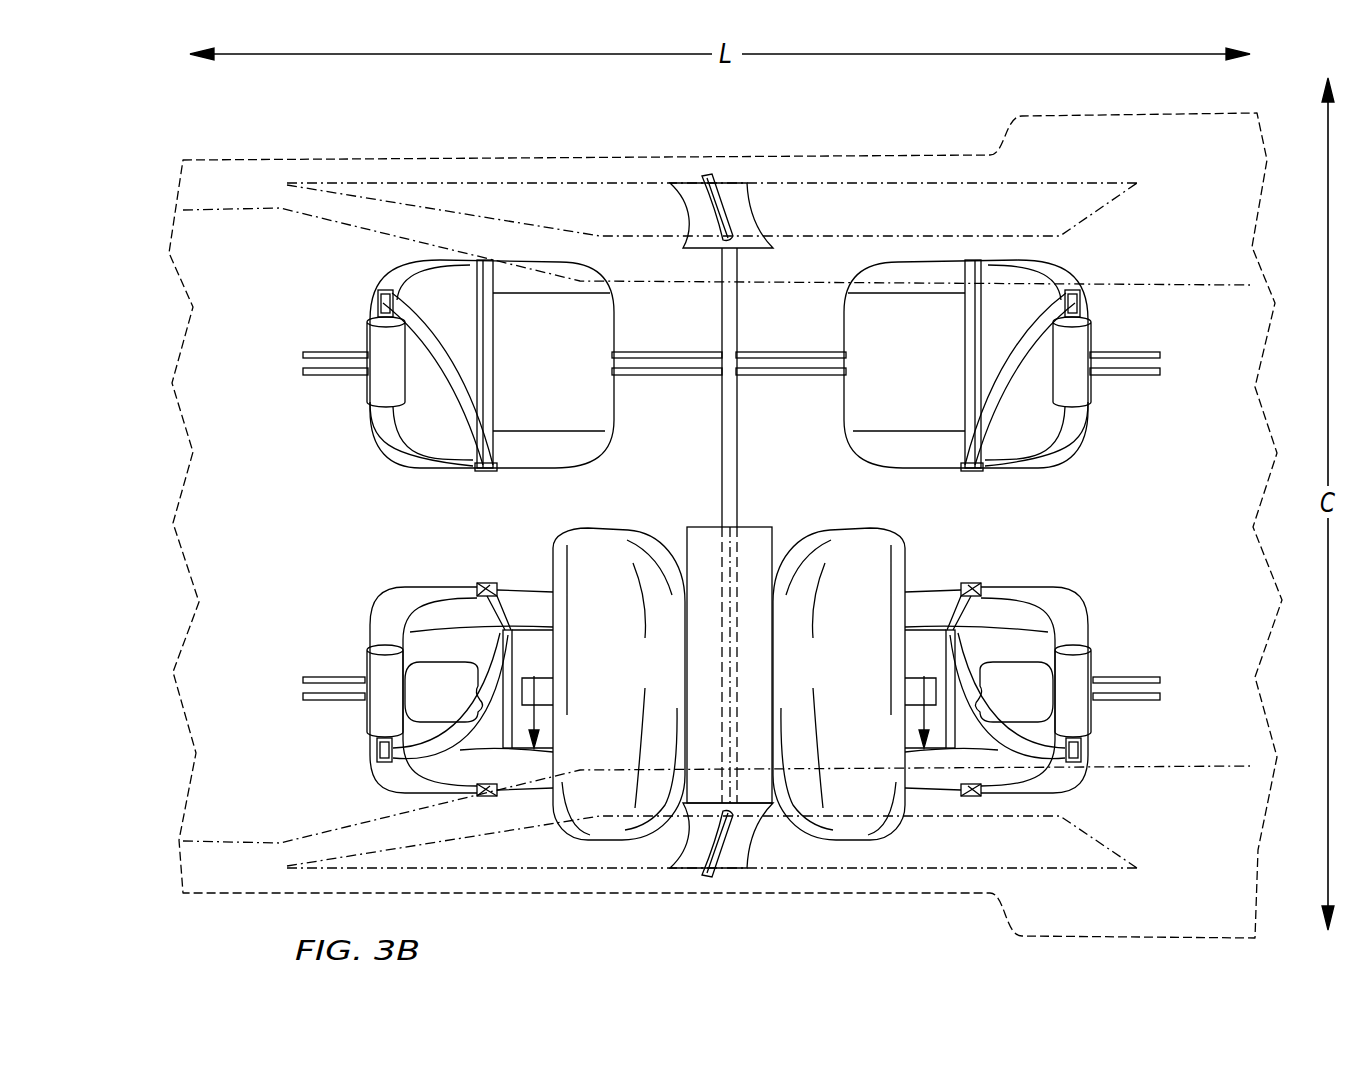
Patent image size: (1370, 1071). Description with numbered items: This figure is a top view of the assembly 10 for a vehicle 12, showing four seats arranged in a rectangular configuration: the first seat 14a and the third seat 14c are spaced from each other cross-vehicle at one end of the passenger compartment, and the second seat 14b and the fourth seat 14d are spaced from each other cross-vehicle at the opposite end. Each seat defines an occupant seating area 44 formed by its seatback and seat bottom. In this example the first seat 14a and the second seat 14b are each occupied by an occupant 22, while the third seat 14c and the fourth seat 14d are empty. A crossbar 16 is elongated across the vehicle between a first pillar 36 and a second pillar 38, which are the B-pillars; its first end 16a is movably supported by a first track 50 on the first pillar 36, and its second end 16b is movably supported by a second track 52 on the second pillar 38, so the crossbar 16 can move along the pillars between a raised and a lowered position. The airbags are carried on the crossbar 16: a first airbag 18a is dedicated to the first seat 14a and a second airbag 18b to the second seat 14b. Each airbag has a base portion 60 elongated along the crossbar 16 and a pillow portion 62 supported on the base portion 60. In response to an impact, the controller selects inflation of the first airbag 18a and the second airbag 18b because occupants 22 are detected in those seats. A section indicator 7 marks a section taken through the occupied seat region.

The section line 7 is at (729, 699).
The assembly 10 is at (772, 203).
The vehicle 12 is at (969, 113).
The first seat 14a is at (372, 708).
The second seat 14b is at (1088, 708).
The third seat 14c is at (373, 342).
The fourth seat 14d is at (1087, 342).
The crossbar 16 is at (741, 412).
The first end 16a is at (743, 252).
The second end 16b is at (742, 796).
The first airbag 18a is at (600, 830).
The second airbag 18b is at (858, 830).
The occupant 22 is at (432, 632).
The first pillar 36 is at (735, 195).
The second pillar 38 is at (738, 858).
The occupant seating area 44 is at (500, 577).
The first track 50 is at (720, 178).
The second track 52 is at (713, 862).
The base portion 60 is at (753, 527).
The pillow portion 62 is at (612, 528).